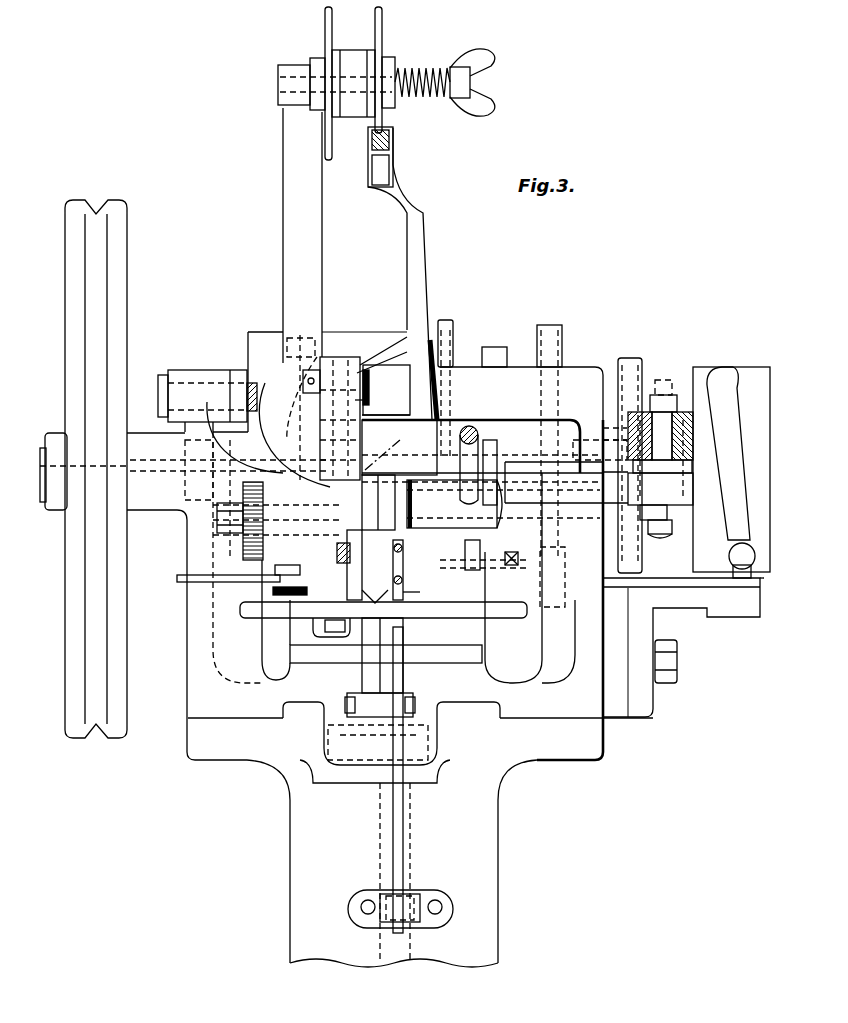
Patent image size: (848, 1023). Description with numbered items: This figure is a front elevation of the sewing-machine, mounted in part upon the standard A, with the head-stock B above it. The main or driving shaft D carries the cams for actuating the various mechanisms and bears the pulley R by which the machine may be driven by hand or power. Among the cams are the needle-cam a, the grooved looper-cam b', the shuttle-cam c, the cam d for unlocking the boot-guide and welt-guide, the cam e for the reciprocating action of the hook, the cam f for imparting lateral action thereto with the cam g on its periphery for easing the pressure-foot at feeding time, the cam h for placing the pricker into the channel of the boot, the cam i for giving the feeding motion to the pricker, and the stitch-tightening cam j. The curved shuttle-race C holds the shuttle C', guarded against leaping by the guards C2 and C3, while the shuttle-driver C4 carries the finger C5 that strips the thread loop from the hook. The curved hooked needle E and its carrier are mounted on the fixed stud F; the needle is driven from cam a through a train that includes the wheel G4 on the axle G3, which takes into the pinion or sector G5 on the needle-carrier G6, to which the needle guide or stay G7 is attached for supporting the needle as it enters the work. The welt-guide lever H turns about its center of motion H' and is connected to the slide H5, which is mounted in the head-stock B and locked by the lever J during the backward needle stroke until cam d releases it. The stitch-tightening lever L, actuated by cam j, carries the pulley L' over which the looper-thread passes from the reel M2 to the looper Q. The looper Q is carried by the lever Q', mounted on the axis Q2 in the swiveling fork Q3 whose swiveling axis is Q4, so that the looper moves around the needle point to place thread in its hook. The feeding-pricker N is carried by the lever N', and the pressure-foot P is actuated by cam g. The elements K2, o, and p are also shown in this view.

The standard A is at (392, 863).
The head-stock B is at (443, 548).
The pulley R is at (96, 469).
The main or driving shaft D is at (75, 471).
The needle-cam a is at (260, 368).
The grooved looper-cam b' is at (268, 409).
The stitch-tightening lever L is at (362, 264).
The pulley of the stitch-tightening lever L' is at (369, 158).
The reel M2 is at (386, 83).
The unlocking cam d is at (445, 330).
The stitch-tightening cam j is at (522, 442).
The pricker cam h is at (630, 465).
The hook cam e is at (731, 472).
The plate K2 is at (762, 578).
The collar o is at (660, 442).
The feeding cam i is at (664, 535).
The swiveling fork Q3 is at (318, 368).
The shuttle-cam c is at (382, 355).
The axis of the looper lever Q2 is at (386, 390).
The looper lever Q' is at (365, 403).
The swiveling axis Q4 is at (386, 405).
The wheel G4 is at (399, 447).
The looper Q is at (494, 471).
The pin p is at (467, 465).
The pressure-foot cam g is at (491, 472).
The pricker lever N' is at (378, 502).
The pressure-foot P is at (493, 533).
The feeding-pricker N is at (357, 565).
The needle guide or stay G7 is at (403, 556).
The needle-carrier G6 is at (418, 585).
The hook lateral cam f is at (483, 554).
The guard C2 is at (520, 568).
The axle G3 is at (217, 518).
The pinion or sector G5 is at (339, 568).
The finger C5 is at (261, 565).
The guard C3 is at (190, 582).
The shuttle-driver C4 is at (286, 614).
The shuttle C' is at (273, 620).
The fixed stud F is at (299, 622).
The curved hooked needle E is at (362, 613).
The curved shuttle-race C is at (407, 578).
The locking-lever J is at (360, 676).
The welt-guide lever H is at (391, 775).
The slide H5 is at (405, 688).
The center of motion of the welt-guide lever H' is at (400, 895).